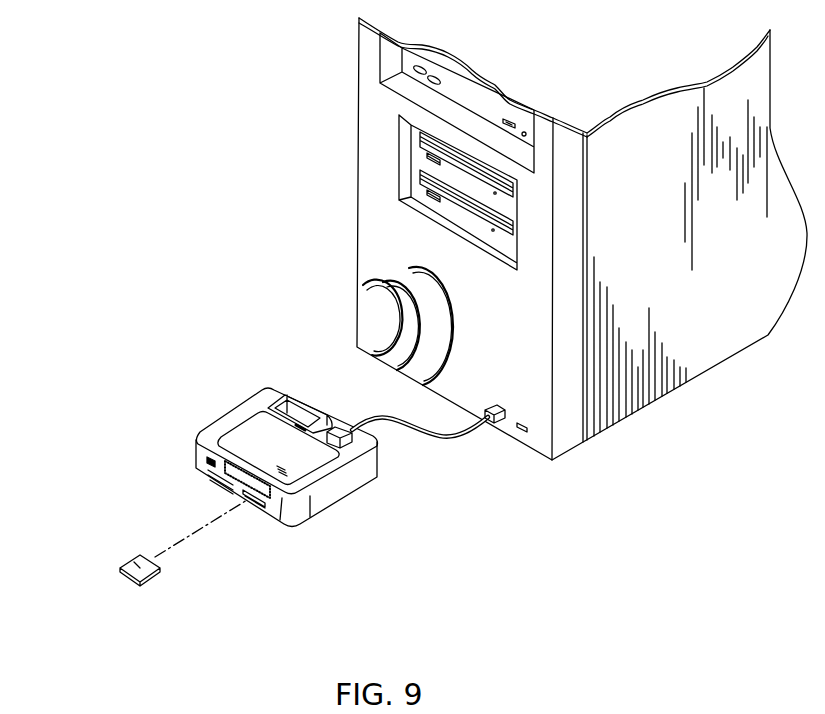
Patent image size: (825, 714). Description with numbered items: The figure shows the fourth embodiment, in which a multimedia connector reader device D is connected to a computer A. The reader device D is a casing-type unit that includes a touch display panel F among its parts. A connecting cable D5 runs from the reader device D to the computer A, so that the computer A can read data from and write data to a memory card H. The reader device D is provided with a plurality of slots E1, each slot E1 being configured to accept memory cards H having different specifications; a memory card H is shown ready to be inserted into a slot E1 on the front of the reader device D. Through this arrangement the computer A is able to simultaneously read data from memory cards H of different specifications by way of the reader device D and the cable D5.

The computer A is at (338, 208).
The multimedia connector reader device D is at (220, 377).
The connection cable D5 is at (433, 450).
The slot E1 is at (257, 507).
The touch display panel F is at (237, 445).
The memory card H is at (138, 561).